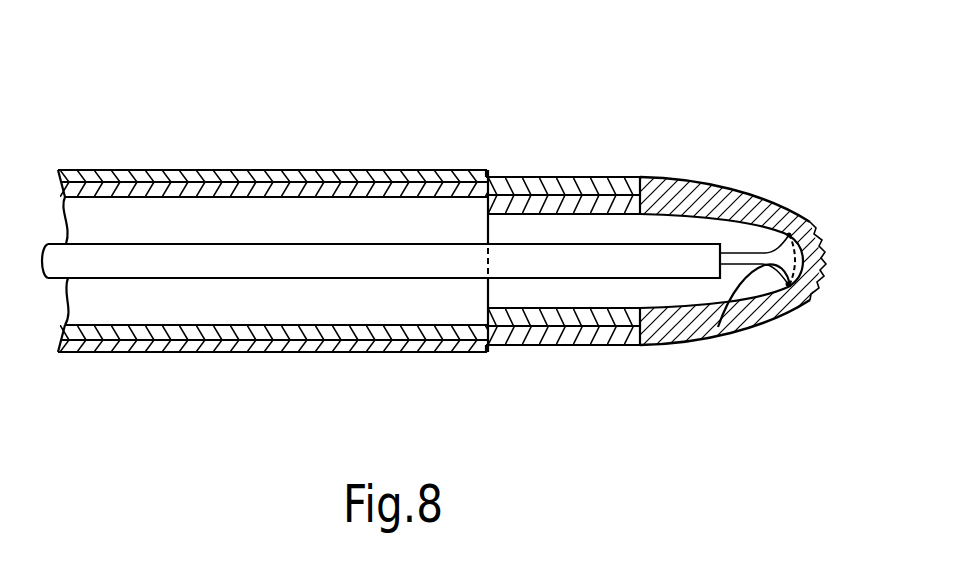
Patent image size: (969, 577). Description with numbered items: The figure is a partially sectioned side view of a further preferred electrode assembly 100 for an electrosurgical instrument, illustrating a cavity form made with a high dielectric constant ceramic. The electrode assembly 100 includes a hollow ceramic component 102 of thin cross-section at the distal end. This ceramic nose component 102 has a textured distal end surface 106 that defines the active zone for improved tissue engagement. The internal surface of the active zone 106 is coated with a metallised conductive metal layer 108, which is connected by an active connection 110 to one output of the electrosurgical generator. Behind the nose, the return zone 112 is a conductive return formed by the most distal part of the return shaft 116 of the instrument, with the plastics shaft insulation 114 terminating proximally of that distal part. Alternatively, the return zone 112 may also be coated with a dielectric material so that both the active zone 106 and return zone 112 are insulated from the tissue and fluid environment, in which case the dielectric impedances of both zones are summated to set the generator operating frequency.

The electrode assembly 100 is at (430, 100).
The hollow ceramic component 102 is at (695, 177).
The textured distal end surface 106 is at (825, 265).
The metallised conductive metal layer 108 is at (820, 277).
The active connection 110 is at (718, 330).
The return zone 112 is at (557, 177).
The plastics shaft insulation 114 is at (382, 350).
The return shaft 116 is at (203, 177).